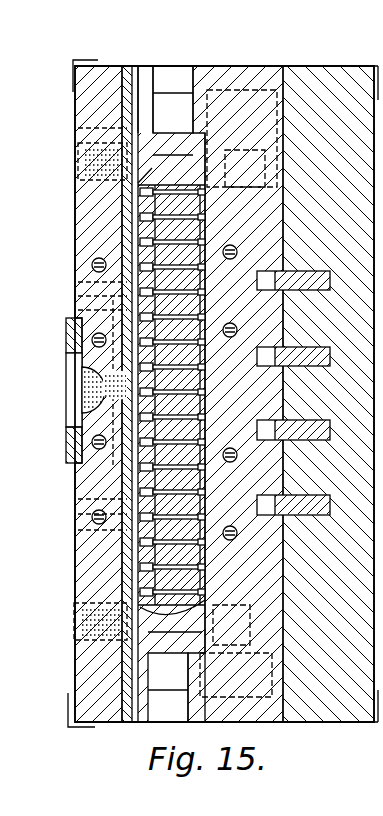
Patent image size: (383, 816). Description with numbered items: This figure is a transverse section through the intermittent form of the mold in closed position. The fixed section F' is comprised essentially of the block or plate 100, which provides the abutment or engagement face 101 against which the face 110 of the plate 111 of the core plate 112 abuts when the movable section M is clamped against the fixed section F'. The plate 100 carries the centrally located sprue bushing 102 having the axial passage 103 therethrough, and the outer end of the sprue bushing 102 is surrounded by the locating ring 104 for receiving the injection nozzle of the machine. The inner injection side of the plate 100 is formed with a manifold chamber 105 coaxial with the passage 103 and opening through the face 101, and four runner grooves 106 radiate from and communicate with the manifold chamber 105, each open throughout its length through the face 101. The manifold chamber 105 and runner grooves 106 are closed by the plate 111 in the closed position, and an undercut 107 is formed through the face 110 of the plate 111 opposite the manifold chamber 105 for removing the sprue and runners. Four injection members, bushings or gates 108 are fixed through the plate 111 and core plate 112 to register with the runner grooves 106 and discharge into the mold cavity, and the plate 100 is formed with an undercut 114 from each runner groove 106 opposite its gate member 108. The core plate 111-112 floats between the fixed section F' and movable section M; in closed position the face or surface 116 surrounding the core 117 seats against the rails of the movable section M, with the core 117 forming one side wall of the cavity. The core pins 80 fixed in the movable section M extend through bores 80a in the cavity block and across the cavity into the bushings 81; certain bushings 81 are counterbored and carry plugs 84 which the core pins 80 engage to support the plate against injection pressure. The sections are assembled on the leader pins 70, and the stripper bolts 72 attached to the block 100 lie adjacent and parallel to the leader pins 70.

The fixed section F' is at (223, 369).
The movable section M is at (322, 68).
The leader pins 70 is at (173, 680).
The stripper bolts 72 is at (183, 620).
The core pins 80 is at (212, 370).
The bores 80a is at (252, 293).
The bushings 81 is at (78, 183).
The plugs 84 is at (130, 486).
The block or plate 100 is at (82, 552).
The abutment or engagement face 101 is at (78, 126).
The sprue bushing 102 is at (73, 412).
The axial passage 103 is at (90, 392).
The locating ring 104 is at (73, 451).
The manifold chamber 105 is at (105, 378).
The runner grooves 106 is at (78, 310).
The undercut 107 is at (74, 356).
The injection members, bushings or gates 108 is at (78, 296).
The face 110 is at (142, 96).
The plate 111 is at (130, 86).
The core plate 112 is at (153, 98).
The undercut 114 is at (78, 282).
The face or surface 116 is at (78, 153).
The core 117 is at (127, 220).